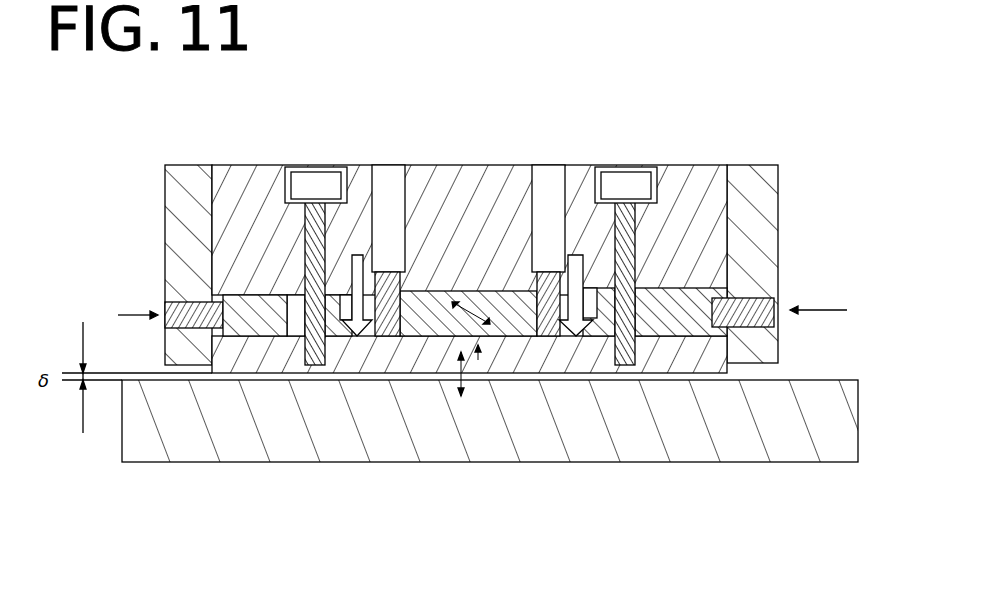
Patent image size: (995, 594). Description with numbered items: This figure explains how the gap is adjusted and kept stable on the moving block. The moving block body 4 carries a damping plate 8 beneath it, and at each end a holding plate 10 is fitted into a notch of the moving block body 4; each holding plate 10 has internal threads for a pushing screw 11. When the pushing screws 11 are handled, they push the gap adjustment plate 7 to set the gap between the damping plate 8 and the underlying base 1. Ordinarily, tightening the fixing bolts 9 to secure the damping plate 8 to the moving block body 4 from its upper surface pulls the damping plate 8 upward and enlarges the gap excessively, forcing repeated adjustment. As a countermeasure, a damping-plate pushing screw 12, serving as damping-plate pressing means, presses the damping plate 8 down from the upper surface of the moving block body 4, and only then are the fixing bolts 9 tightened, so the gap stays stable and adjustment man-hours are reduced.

The base 1 is at (628, 445).
The moving block body 4 is at (499, 192).
The gap adjustment plate 7 is at (250, 305).
The damping plate 8 is at (570, 358).
The fixing bolts 9 is at (638, 185).
The holding plate 10 is at (778, 190).
The pushing screws 11 is at (760, 300).
The damping-plate pushing screw 12 is at (388, 298).